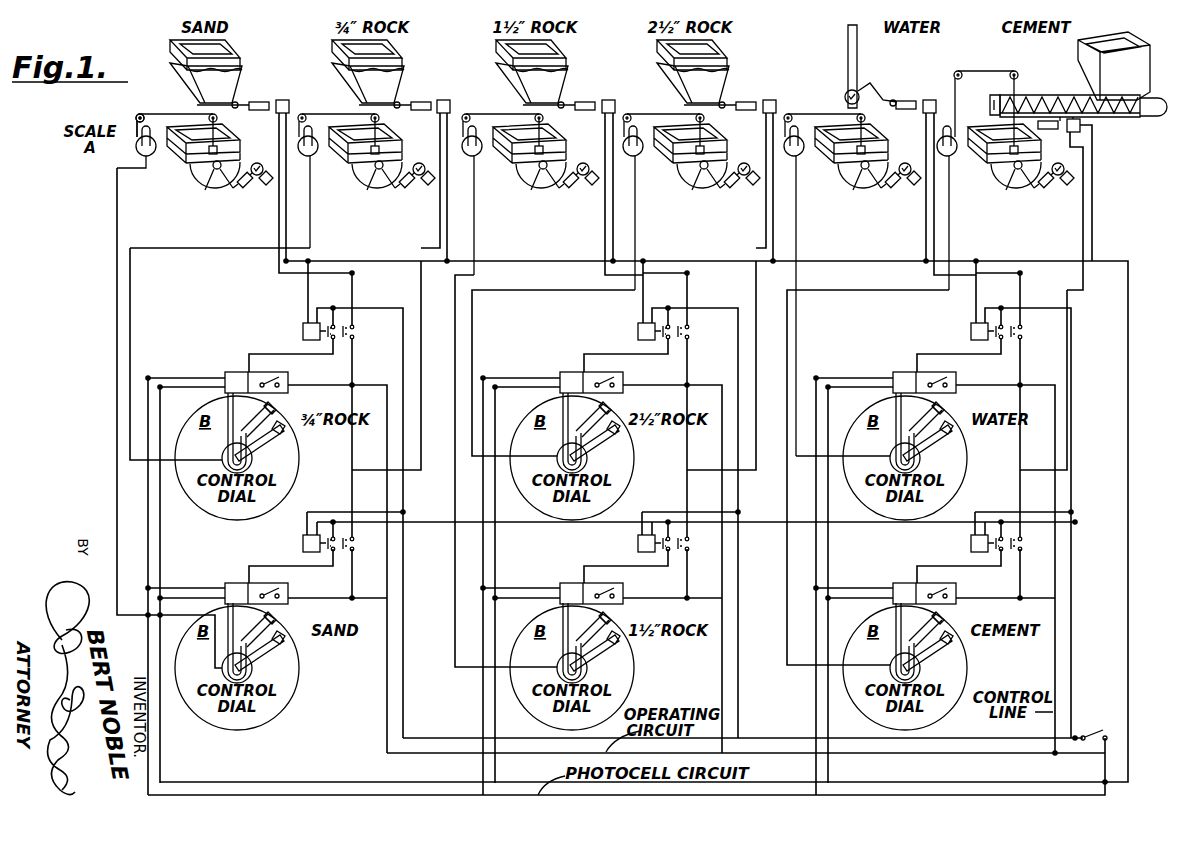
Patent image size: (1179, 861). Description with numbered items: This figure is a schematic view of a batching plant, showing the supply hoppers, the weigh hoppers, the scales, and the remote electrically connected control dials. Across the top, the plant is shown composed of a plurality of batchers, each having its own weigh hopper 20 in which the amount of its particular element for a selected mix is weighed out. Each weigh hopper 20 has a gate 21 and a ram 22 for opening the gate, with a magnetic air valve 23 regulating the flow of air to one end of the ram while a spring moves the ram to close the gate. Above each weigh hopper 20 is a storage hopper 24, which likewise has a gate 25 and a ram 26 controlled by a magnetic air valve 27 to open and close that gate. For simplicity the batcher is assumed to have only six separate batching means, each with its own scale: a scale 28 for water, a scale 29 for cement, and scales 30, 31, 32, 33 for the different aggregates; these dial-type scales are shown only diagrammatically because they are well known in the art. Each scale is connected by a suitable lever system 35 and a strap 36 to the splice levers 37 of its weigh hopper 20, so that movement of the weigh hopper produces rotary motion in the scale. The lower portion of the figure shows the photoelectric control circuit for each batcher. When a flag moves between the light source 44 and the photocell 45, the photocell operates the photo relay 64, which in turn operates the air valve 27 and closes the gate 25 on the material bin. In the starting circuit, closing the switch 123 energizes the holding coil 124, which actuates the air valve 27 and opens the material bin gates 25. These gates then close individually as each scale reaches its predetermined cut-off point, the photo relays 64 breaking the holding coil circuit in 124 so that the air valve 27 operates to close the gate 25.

The weigh hopper 20 is at (1009, 167).
The gate 21 is at (1021, 180).
The ram 22 is at (1050, 188).
The magnetic air valve 23 is at (1060, 164).
The storage hopper 24 is at (1130, 85).
The gate 25 is at (999, 107).
The ram 26 is at (1045, 130).
The magnetic air valve 27 is at (1082, 126).
The scale 28 is at (799, 157).
The scale 29 is at (952, 157).
The scale 30 is at (638, 157).
The scale 31 is at (477, 157).
The scale 32 is at (313, 157).
The scale 33 is at (150, 157).
The lever system 35 is at (205, 114).
The strap 36 is at (136, 118).
The splice levers 37 is at (238, 143).
The light source 44 is at (952, 637).
The photocell 45 is at (937, 624).
The photo relay 64 is at (902, 583).
The switch 123 is at (1108, 731).
The holding coil 124 is at (971, 543).